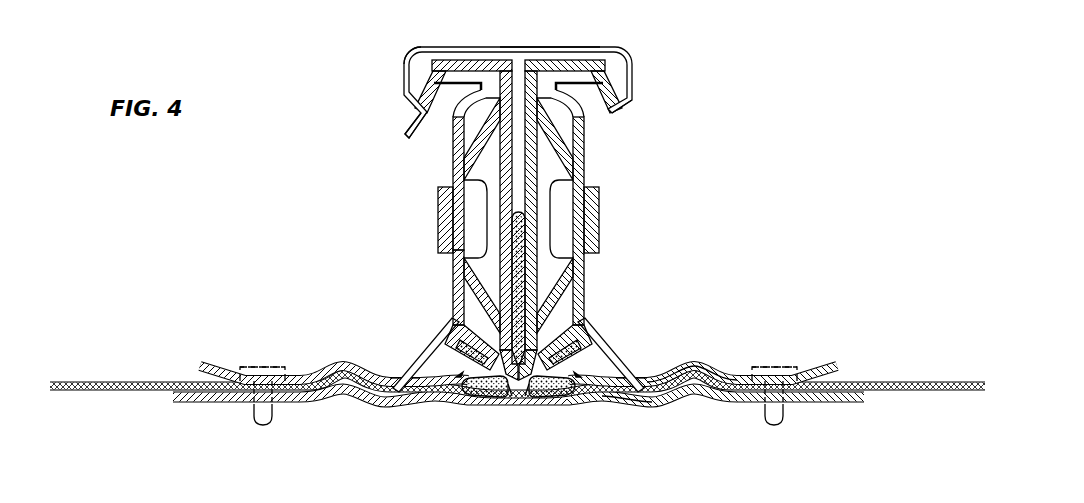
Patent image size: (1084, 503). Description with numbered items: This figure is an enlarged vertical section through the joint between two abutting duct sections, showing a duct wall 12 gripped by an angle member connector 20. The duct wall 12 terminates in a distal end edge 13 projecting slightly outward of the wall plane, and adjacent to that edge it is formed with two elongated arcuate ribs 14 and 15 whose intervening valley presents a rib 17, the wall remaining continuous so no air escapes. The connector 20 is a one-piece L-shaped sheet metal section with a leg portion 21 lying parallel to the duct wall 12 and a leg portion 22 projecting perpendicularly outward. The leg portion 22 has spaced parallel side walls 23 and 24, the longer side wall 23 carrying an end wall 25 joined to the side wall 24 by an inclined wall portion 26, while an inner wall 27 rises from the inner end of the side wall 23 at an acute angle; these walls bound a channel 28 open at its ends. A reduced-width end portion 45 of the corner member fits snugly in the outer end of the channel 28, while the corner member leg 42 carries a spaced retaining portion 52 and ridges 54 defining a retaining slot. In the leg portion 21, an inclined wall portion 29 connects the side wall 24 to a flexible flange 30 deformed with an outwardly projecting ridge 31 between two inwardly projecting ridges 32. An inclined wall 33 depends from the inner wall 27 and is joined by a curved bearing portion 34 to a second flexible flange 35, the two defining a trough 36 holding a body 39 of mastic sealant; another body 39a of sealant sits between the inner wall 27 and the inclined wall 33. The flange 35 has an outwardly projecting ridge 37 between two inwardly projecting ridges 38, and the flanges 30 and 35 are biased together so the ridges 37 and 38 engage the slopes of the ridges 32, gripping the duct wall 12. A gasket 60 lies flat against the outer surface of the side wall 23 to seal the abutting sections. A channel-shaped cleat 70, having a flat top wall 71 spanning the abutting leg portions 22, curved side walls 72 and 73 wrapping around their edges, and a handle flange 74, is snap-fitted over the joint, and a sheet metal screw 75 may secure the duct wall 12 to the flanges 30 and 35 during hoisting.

The duct wall 12 is at (84, 383).
The distal end edge 13 is at (505, 398).
The rib 14 is at (435, 360).
The rib 15 is at (338, 366).
The rib 17 is at (386, 405).
The angle member connector 20 is at (398, 190).
The leg portion 21 is at (257, 352).
The leg portion 22 is at (450, 274).
The side wall 23 is at (516, 75).
The side wall 24 is at (453, 164).
The end wall 25 is at (458, 60).
The inclined wall portion 26 is at (428, 100).
The inner wall 27 is at (458, 328).
The channel 28 is at (560, 302).
The inclined wall portion 29 is at (402, 381).
The flexible flange 30 is at (742, 378).
The outwardly projecting ridge 31 is at (690, 361).
The inwardly projecting ridge 32 is at (665, 400).
The inclined wall 33 is at (470, 345).
The curved bearing portion 34 is at (518, 384).
The flexible flange 35 is at (240, 403).
The trough 36 is at (456, 396).
The outwardly projecting ridge 37 is at (640, 394).
The inwardly projecting ridge 38 is at (640, 384).
The body of mastic sealant 39 is at (483, 400).
The body of mastic sealant 39a is at (578, 352).
The leg 42 is at (546, 118).
The end portion 45 is at (588, 96).
The retaining portion 52 is at (438, 219).
The ridge 54 is at (590, 183).
The gasket 60 is at (512, 256).
The cleat 70 is at (620, 46).
The top wall 71 is at (578, 47).
The side wall 72 is at (408, 60).
The side wall 73 is at (632, 72).
The handle flange 74 is at (407, 133).
The sheet metal screw 75 is at (256, 427).